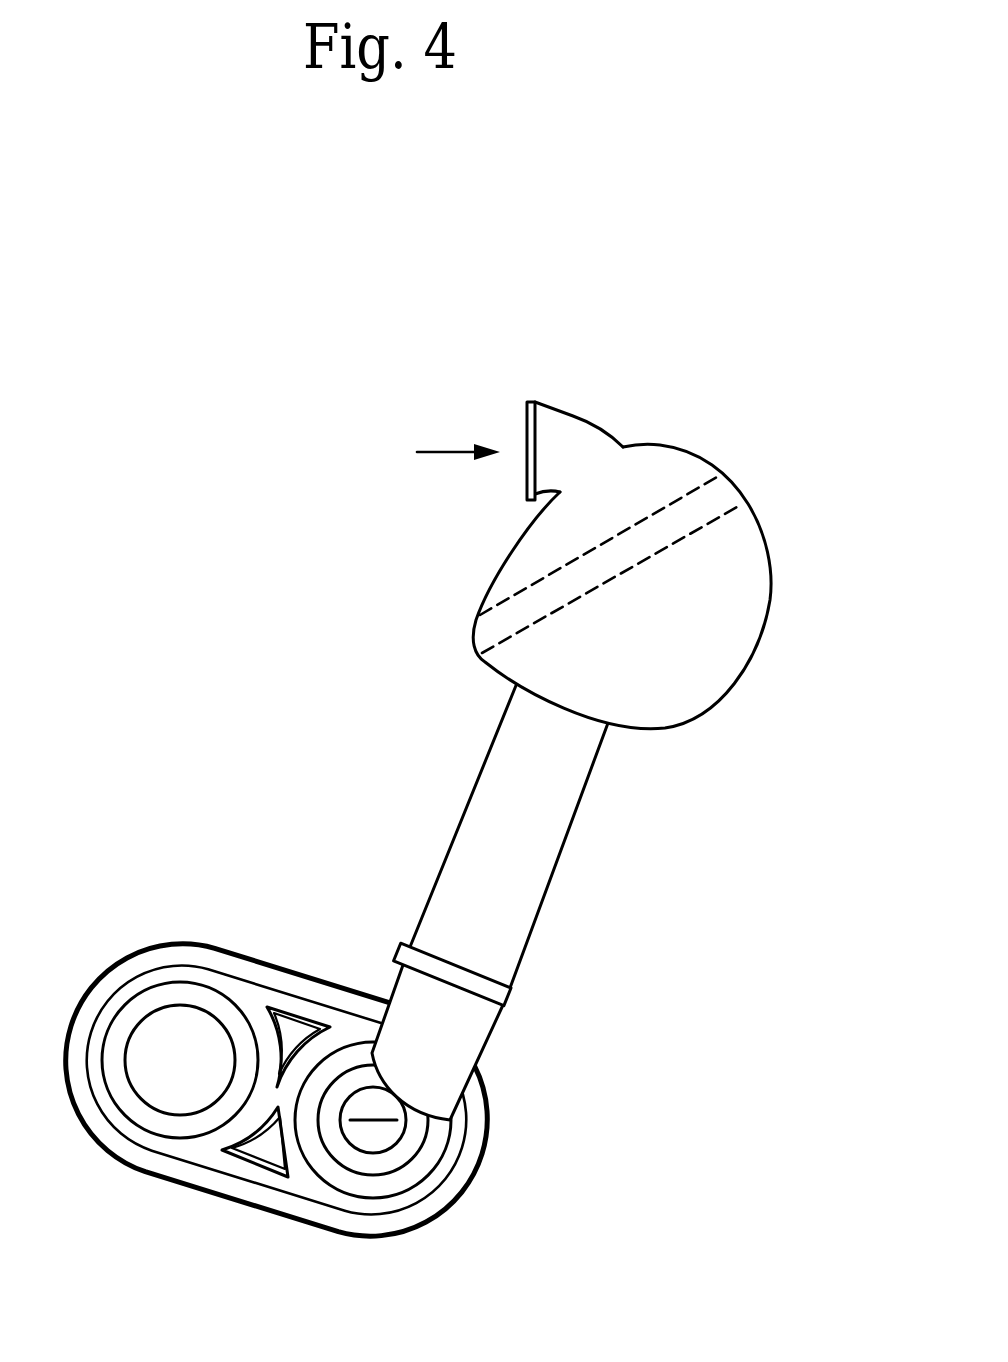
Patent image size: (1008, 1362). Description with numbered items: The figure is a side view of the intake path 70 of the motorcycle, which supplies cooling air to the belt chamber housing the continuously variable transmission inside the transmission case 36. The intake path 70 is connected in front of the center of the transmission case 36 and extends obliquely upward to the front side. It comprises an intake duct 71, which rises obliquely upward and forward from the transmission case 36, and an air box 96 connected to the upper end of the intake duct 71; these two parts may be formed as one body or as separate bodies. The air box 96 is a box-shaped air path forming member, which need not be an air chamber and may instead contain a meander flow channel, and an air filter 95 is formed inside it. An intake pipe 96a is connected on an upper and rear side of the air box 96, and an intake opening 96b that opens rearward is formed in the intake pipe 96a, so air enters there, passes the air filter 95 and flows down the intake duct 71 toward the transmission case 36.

The transmission case 36 is at (258, 1175).
The intake path 70 is at (616, 705).
The intake duct 71 is at (550, 847).
The air filter 95 is at (697, 527).
The air box 96 is at (666, 604).
The intake pipe 96a is at (573, 417).
The intake opening 96b is at (527, 418).